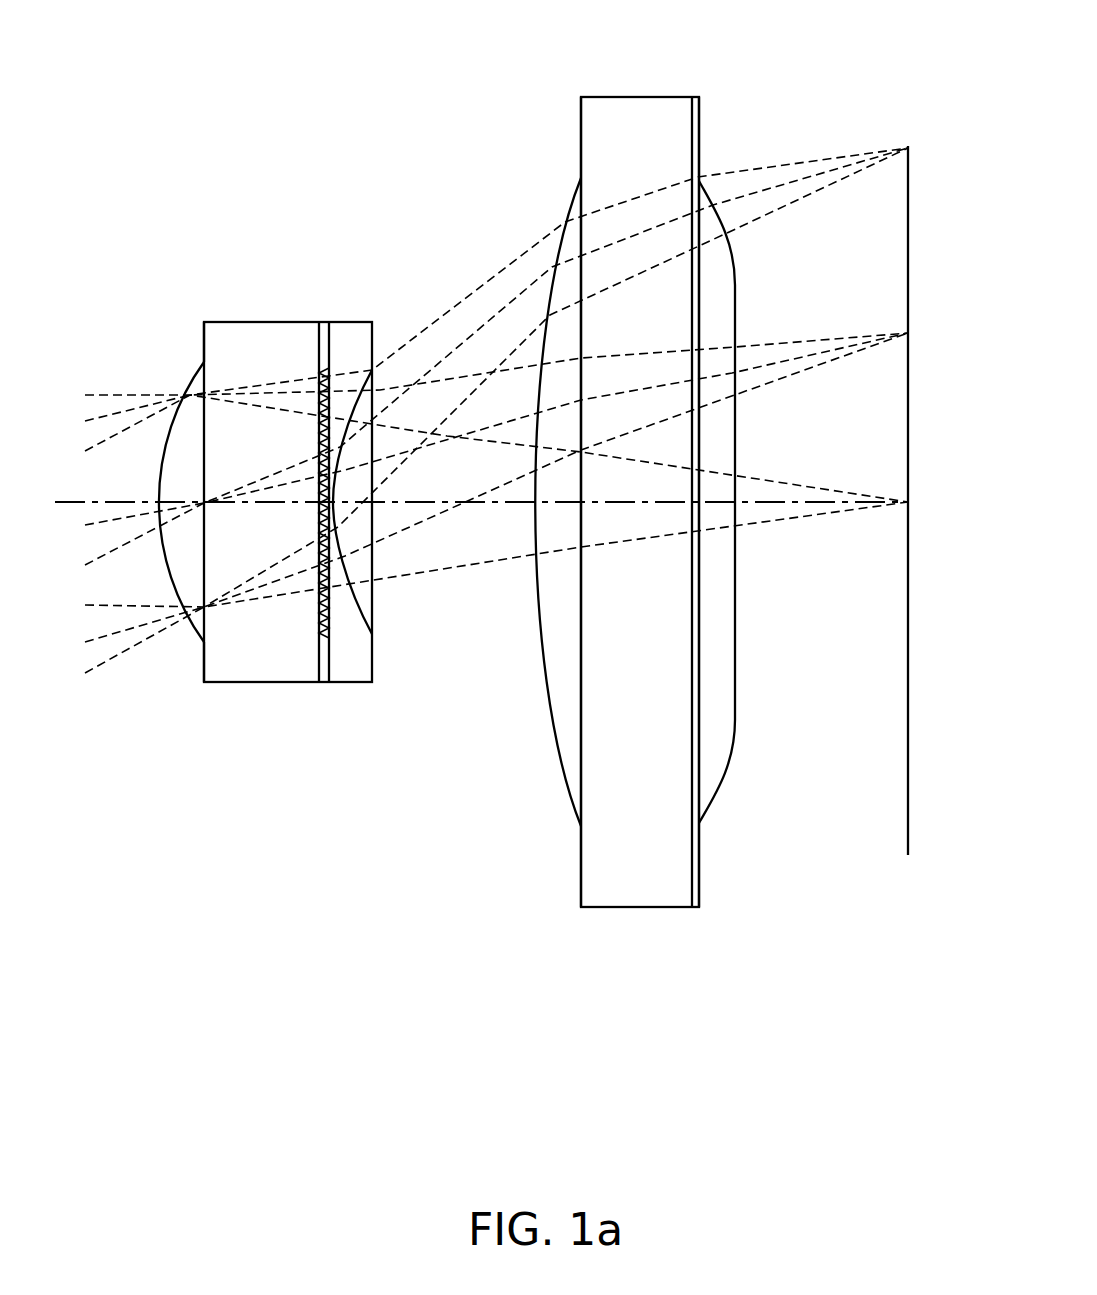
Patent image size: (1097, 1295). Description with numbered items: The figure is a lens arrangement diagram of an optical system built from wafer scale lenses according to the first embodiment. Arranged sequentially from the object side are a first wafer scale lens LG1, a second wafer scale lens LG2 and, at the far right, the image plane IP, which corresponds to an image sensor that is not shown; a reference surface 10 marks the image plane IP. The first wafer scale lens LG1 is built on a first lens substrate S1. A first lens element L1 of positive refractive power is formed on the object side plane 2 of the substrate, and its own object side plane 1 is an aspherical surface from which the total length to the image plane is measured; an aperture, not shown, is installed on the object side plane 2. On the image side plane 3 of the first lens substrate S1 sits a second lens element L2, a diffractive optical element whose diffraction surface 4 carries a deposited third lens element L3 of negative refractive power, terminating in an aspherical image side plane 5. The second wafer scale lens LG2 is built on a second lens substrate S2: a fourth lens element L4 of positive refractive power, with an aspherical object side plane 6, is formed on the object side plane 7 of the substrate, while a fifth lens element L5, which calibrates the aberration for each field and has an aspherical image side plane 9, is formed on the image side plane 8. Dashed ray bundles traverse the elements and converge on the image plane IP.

The object side plane of the first lens element 1 is at (190, 375).
The object side plane of the first lens substrate 2 is at (204, 322).
The image side plane of the first lens substrate 3 is at (316, 330).
The diffraction surface 4 is at (331, 338).
The image side plane of the third lens element 5 is at (374, 338).
The object side plane of the fourth lens element 6 is at (570, 203).
The object side plane of the second lens substrate 7 is at (580, 107).
The image side plane of the second lens substrate 8 is at (691, 130).
The image side plane of the fifth lens element 9 is at (700, 113).
The image surface 10 is at (907, 147).
The first lens element L1 is at (178, 580).
The second lens element L2 is at (323, 674).
The third lens element L3 is at (357, 674).
The fourth lens element L4 is at (567, 767).
The fifth lens element L5 is at (705, 785).
The first lens substrate S1 is at (237, 672).
The second lens substrate S2 is at (632, 873).
The first wafer scale lens LG1 is at (262, 853).
The second wafer scale lens LG2 is at (640, 976).
The image plane IP is at (910, 855).